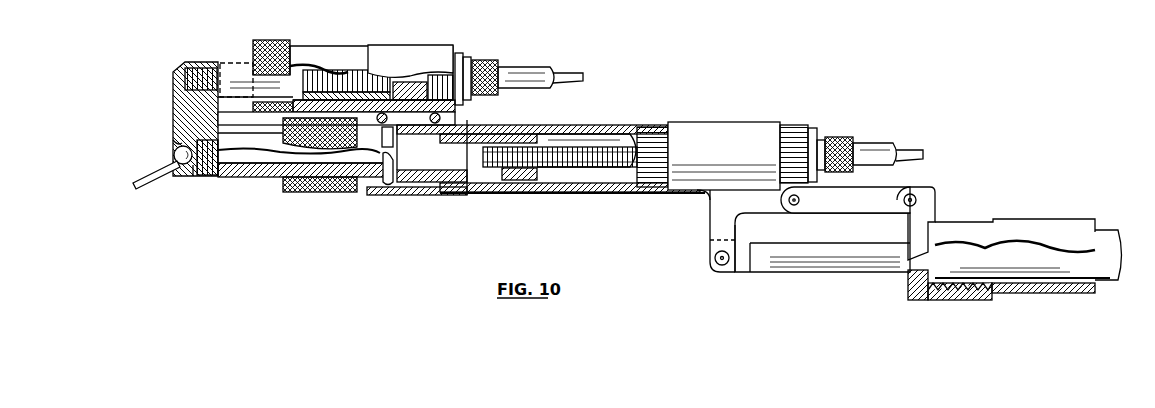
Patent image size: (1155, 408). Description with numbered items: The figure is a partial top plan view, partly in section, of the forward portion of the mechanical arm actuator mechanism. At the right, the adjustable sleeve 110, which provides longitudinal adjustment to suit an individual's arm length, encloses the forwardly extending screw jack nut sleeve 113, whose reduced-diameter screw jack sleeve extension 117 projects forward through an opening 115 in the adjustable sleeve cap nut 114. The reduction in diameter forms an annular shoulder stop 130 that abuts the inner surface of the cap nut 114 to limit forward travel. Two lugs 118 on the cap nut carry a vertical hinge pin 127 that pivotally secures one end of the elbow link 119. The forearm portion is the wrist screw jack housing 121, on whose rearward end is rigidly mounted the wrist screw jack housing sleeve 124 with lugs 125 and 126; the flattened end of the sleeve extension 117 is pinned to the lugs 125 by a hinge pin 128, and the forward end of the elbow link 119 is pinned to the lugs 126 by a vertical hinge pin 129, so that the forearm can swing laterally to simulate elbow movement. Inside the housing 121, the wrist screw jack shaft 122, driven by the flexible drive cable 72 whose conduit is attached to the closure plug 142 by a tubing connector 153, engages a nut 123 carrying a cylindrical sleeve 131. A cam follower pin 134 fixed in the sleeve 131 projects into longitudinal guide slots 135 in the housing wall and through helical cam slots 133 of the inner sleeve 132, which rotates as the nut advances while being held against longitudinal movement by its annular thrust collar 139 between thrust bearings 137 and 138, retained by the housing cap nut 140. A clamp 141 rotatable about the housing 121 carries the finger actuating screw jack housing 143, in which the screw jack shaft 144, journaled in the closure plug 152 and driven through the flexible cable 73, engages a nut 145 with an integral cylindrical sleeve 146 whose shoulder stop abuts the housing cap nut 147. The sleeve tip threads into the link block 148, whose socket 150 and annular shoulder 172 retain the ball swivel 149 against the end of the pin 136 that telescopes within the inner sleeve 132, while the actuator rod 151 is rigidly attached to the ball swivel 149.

The flexible drive cable 72 is at (907, 152).
The cable 73 is at (566, 73).
The adjustable sleeve 110 is at (1050, 230).
The screw jack nut sleeve 113 is at (1107, 240).
The adjustable sleeve cap nut 114 is at (943, 300).
The opening 115 is at (908, 275).
The screw jack sleeve extension 117 is at (767, 272).
The lugs 118 is at (927, 208).
The elbow link 119 is at (873, 188).
The wrist screw jack housing 121 is at (578, 125).
The wrist screw jack shaft 122 is at (557, 168).
The nut 123 is at (517, 170).
The wrist screw jack housing sleeve 124 is at (717, 130).
The lugs 125 is at (717, 228).
The lugs 126 is at (807, 202).
The vertical hinge pin 127 is at (917, 197).
The hinge pin 128 is at (716, 262).
The vertical hinge pin 129 is at (795, 205).
The annular shoulder stop 130 is at (915, 300).
The cylindrical sleeve 131 is at (460, 184).
The inner sleeve 132 is at (455, 172).
The helical cam slots 133 is at (407, 158).
The cam follower pin 134 is at (385, 187).
The longitudinal guide slots 135 is at (397, 196).
The pin 136 is at (235, 158).
The anti-friction thrust bearing 137 is at (295, 193).
The anti-friction thrust bearing 138 is at (310, 186).
The inner sleeve annular thrust collar 139 is at (300, 194).
The housing cap nut 140 is at (283, 181).
The clamp 141 is at (437, 48).
The closure plug 142 is at (813, 130).
The finger actuating screw jack housing 143 is at (308, 48).
The screw jack shaft 144 is at (345, 72).
The nut 145 is at (380, 93).
The cylindrical sleeve 146 is at (227, 63).
The housing cap nut 147 is at (267, 40).
The link block 148 is at (173, 110).
The ball swivel 149 is at (175, 155).
The socket 150 is at (193, 177).
The actuator rod 151 is at (145, 185).
The closure plug 152 is at (460, 57).
The tubing connector 153 is at (853, 138).
The annular shoulder 172 is at (175, 143).